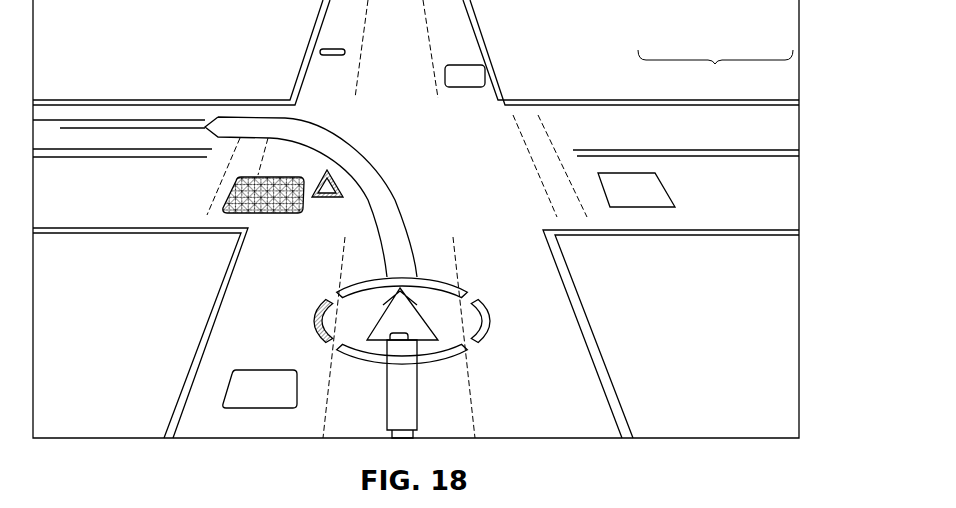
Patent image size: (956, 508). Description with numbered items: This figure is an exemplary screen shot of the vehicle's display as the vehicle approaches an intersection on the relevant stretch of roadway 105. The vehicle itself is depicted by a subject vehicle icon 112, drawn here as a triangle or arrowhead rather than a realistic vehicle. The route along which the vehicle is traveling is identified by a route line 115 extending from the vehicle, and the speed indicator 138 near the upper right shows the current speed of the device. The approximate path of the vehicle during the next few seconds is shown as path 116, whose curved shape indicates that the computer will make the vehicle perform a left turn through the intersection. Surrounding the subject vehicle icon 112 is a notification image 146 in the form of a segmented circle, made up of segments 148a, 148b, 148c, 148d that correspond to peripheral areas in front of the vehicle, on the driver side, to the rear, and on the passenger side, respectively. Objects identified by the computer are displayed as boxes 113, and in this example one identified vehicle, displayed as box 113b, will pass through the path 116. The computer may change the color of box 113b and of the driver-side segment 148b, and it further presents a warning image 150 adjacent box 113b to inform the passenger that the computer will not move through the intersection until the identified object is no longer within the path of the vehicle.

The roadway 105 is at (188, 266).
The subject vehicle icon 112 is at (415, 317).
The box 113 is at (331, 55).
The box 113b is at (245, 193).
The route line 115 is at (112, 122).
The path 116 is at (397, 203).
The speed indicator 138 is at (716, 44).
The notification image 146 is at (395, 327).
The segment 148a is at (372, 279).
The segment 148b is at (318, 313).
The segment 148c is at (446, 358).
The segment 148d is at (488, 338).
The warning image 150 is at (338, 176).